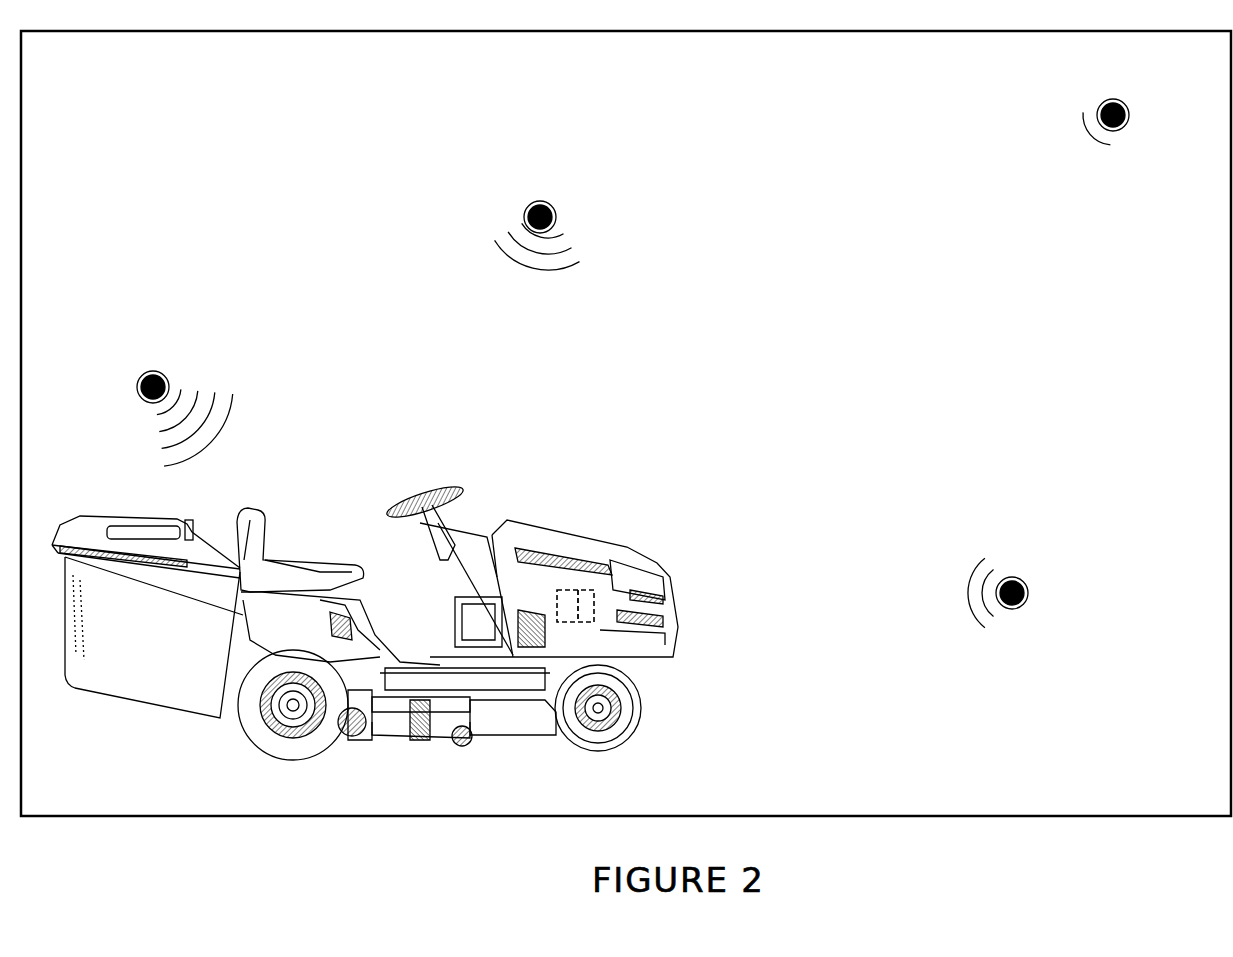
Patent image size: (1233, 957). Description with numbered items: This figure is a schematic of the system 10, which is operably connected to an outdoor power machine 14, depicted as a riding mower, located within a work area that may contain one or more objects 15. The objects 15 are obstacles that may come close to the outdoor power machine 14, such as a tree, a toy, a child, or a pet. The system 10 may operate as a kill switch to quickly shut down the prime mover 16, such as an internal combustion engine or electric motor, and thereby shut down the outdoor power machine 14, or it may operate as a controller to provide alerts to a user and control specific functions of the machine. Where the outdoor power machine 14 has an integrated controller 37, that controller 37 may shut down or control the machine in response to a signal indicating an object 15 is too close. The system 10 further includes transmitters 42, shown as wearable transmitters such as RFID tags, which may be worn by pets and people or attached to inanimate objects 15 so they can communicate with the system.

The system 10 is at (563, 580).
The outdoor power machine 14 is at (405, 478).
The object 15 is at (158, 373).
The prime mover 16 is at (583, 592).
The controller 37 is at (455, 530).
The transmitter 42 is at (146, 374).